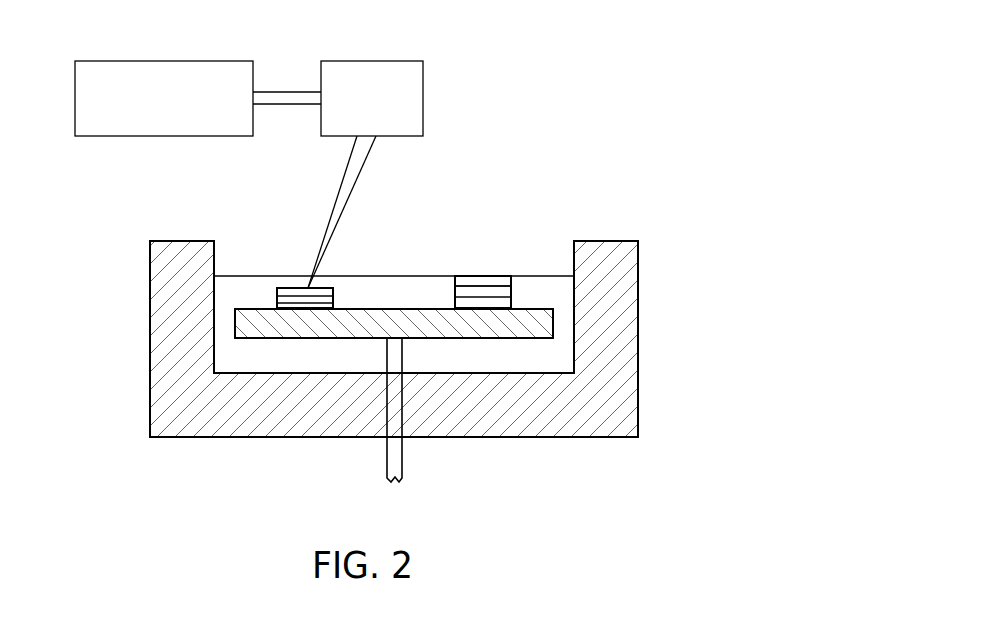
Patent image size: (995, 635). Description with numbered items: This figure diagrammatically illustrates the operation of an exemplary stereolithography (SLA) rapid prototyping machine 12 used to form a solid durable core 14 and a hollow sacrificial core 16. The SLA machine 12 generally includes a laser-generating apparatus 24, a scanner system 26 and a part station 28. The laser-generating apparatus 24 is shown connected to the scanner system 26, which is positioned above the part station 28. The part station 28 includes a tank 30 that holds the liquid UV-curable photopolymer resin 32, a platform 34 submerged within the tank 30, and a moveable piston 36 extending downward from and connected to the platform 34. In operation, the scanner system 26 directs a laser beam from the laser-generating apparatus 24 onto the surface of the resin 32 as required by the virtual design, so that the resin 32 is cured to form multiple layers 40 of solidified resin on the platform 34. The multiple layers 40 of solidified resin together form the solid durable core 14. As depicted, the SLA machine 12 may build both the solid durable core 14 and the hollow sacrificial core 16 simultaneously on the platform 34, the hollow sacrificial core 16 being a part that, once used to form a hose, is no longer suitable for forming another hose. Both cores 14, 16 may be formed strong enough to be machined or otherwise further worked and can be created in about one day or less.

The rapid prototyping machine 12 is at (587, 97).
The solid durable core 14 is at (343, 259).
The hollow sacrificial core 16 is at (511, 261).
The laser-generating apparatus 24 is at (165, 60).
The scanner system 26 is at (370, 60).
The part station 28 is at (657, 294).
The tank 30 is at (214, 243).
The liquid UV-curable photopolymer resin 32 is at (247, 278).
The platform 34 is at (545, 323).
The moveable piston 36 is at (402, 465).
The multiple layers of solidified resin 40 is at (481, 276).